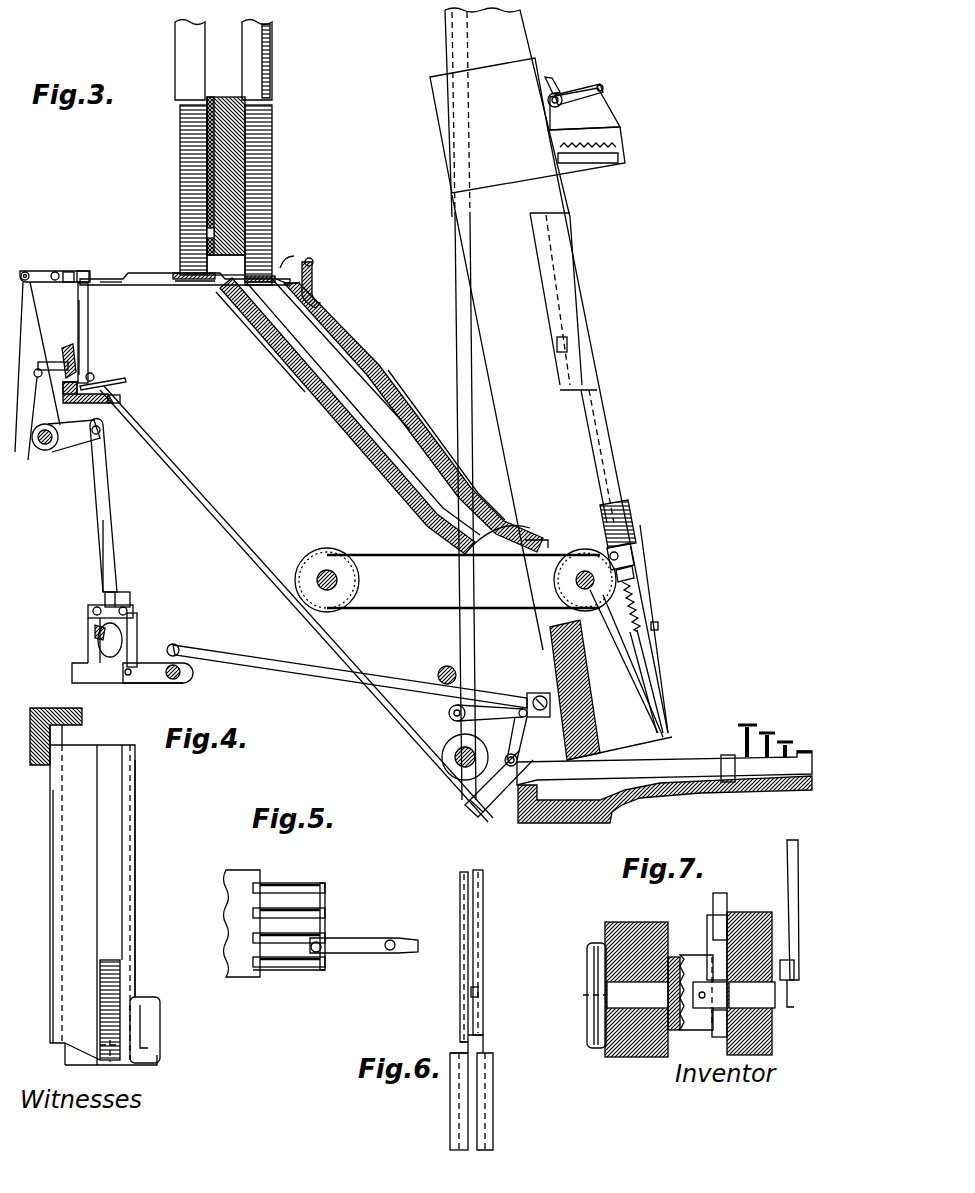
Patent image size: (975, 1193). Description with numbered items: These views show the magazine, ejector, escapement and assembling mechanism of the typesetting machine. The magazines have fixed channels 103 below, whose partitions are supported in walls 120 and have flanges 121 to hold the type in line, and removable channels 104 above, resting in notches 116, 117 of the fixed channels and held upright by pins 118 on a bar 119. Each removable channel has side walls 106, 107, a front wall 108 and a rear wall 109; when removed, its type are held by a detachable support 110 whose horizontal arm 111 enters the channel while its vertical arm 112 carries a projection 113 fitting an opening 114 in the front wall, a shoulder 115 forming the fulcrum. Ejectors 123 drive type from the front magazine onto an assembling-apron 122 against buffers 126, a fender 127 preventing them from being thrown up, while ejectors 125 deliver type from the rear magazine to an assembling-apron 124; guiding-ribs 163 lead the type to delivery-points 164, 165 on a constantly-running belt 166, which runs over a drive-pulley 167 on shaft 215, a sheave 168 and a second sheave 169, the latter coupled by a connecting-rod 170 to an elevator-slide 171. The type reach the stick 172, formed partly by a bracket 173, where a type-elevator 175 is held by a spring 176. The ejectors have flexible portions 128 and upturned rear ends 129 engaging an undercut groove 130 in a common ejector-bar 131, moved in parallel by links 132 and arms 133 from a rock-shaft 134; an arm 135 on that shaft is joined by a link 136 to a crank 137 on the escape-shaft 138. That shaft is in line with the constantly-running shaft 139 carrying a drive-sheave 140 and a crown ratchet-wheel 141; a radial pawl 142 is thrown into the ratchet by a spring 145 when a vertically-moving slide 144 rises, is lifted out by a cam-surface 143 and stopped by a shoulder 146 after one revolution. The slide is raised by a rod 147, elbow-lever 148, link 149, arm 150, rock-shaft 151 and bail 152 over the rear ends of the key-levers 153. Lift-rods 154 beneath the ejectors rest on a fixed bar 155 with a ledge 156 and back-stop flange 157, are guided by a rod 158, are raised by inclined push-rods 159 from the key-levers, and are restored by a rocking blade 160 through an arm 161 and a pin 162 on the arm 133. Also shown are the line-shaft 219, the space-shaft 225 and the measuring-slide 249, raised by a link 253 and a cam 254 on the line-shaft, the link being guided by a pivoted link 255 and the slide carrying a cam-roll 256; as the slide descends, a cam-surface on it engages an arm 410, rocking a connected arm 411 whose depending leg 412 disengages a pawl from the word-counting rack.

In FIG. 3, the fixed magazine-channels 103 is at (266, 186).
In FIG. 5, the fixed magazine-channels 103 is at (325, 908).
In FIG. 6, the fixed magazine-channels 103 is at (494, 1070).
In FIG. 3, the removable channels 104 is at (252, 60).
In FIG. 4, the removable channels 104 is at (136, 885).
In FIG. 6, the removable channels 104 is at (484, 888).
In FIG. 4, the side wall 106 is at (110, 788).
In FIG. 4, the side wall 107 is at (73, 905).
In FIG. 6, the front wall 108 is at (476, 958).
In FIG. 4, the rear wall 109 is at (52, 862).
In FIG. 4, the detachable support 110 is at (125, 1070).
In FIG. 4, the horizontal arm 111 is at (105, 1062).
In FIG. 4, the vertical arm 112 is at (170, 1030).
In FIG. 4, the projection 113 is at (140, 997).
In FIG. 6, the opening 114 is at (479, 992).
In FIG. 4, the shoulder 115 is at (121, 1064).
In FIG. 5, the notch 116 is at (282, 883).
In FIG. 6, the notch 116 is at (488, 1043).
In FIG. 5, the notch 117 is at (284, 970).
In FIG. 6, the notch 117 is at (456, 1047).
In FIG. 4, the pins 118 is at (63, 740).
In FIG. 4, the bar 119 is at (42, 708).
In FIG. 3, the walls 120 is at (196, 160).
In FIG. 5, the walls 120 is at (243, 870).
In FIG. 5, the flanges 121 is at (325, 920).
In FIG. 3, the assembling-apron 122 is at (340, 335).
In FIG. 3, the ejectors 123 is at (200, 280).
In FIG. 3, the assembling-apron 124 is at (290, 362).
In FIG. 3, the ejectors 125 is at (147, 273).
In FIG. 3, the buffers 126 is at (312, 281).
In FIG. 3, the fender 127 is at (294, 270).
In FIG. 3, the flexible portions 128 is at (112, 281).
In FIG. 3, the rear ends 129 is at (89, 306).
In FIG. 3, the undercut groove 130 is at (89, 277).
In FIG. 3, the ejector-bar 131 is at (70, 272).
In FIG. 3, the links 132 is at (36, 270).
In FIG. 3, the arms 133 is at (27, 296).
In FIG. 3, the rock-shaft 134 is at (45, 450).
In FIG. 3, the arm 135 is at (108, 498).
In FIG. 3, the link 136 is at (112, 555).
In FIG. 7, the link 136 is at (787, 845).
In FIG. 7, the crank 137 is at (790, 983).
In FIG. 7, the escape-shaft 138 is at (751, 983).
In FIG. 7, the constantly-running shaft 139 is at (636, 989).
In FIG. 7, the drive-sheave 140 is at (587, 963).
In FIG. 7, the crown ratchet-wheel 141 is at (672, 962).
In FIG. 7, the radial pawl 142 is at (703, 1005).
In FIG. 3, the cam-surface 143 is at (98, 633).
In FIG. 3, the slide 144 is at (118, 596).
In FIG. 7, the slide 144 is at (726, 898).
In FIG. 7, the spring 145 is at (700, 960).
In FIG. 3, the projecting shoulder 146 is at (120, 617).
In FIG. 3, the rod 147 is at (130, 636).
In FIG. 3, the elbow-lever 148 is at (183, 688).
In FIG. 3, the link 149 is at (338, 672).
In FIG. 3, the arm 150 is at (520, 744).
In FIG. 3, the rock-shaft 151 is at (490, 790).
In FIG. 3, the bail 152 is at (498, 812).
In FIG. 3, the key-levers 153 is at (690, 762).
In FIG. 3, the lift-rods 154 is at (89, 338).
In FIG. 3, the fixed bar 155 is at (115, 400).
In FIG. 3, the ledge 156 is at (80, 442).
In FIG. 3, the flange 157 is at (126, 380).
In FIG. 3, the rod 158 is at (93, 374).
In FIG. 3, the push-rods 159 is at (180, 480).
In FIG. 3, the rocking blade 160 is at (68, 348).
In FIG. 3, the arm 161 is at (60, 448).
In FIG. 3, the pin 162 is at (40, 417).
In FIG. 3, the guiding-ribs 163 is at (334, 392).
In FIG. 3, the delivery-point 164 is at (536, 544).
In FIG. 3, the delivery-point 165 is at (496, 525).
In FIG. 3, the belt 166 is at (384, 553).
In FIG. 3, the drive-pulley 167 is at (358, 580).
In FIG. 3, the sheave 168 is at (634, 563).
In FIG. 3, the second sheave 169 is at (637, 603).
In FIG. 3, the connecting-rod 170 is at (633, 655).
In FIG. 3, the elevator-slide 171 is at (655, 683).
In FIG. 3, the stick 172 is at (605, 458).
In FIG. 3, the bracket 173 is at (551, 409).
In FIG. 3, the type-elevator 175 is at (634, 578).
In FIG. 3, the spring 176 is at (658, 628).
In FIG. 3, the shaft 215 is at (322, 572).
In FIG. 3, the line-shaft 219 is at (455, 765).
In FIG. 3, the space-shaft 225 is at (445, 660).
In FIG. 3, the measuring-slide 249 is at (515, 36).
In FIG. 3, the link 253 is at (458, 406).
In FIG. 3, the cam 254 is at (445, 736).
In FIG. 3, the link 255 is at (524, 708).
In FIG. 3, the cam-roll 256 is at (440, 713).
In FIG. 3, the arm 410 is at (553, 78).
In FIG. 3, the arm 411 is at (588, 90).
In FIG. 3, the depending leg 412 is at (610, 112).